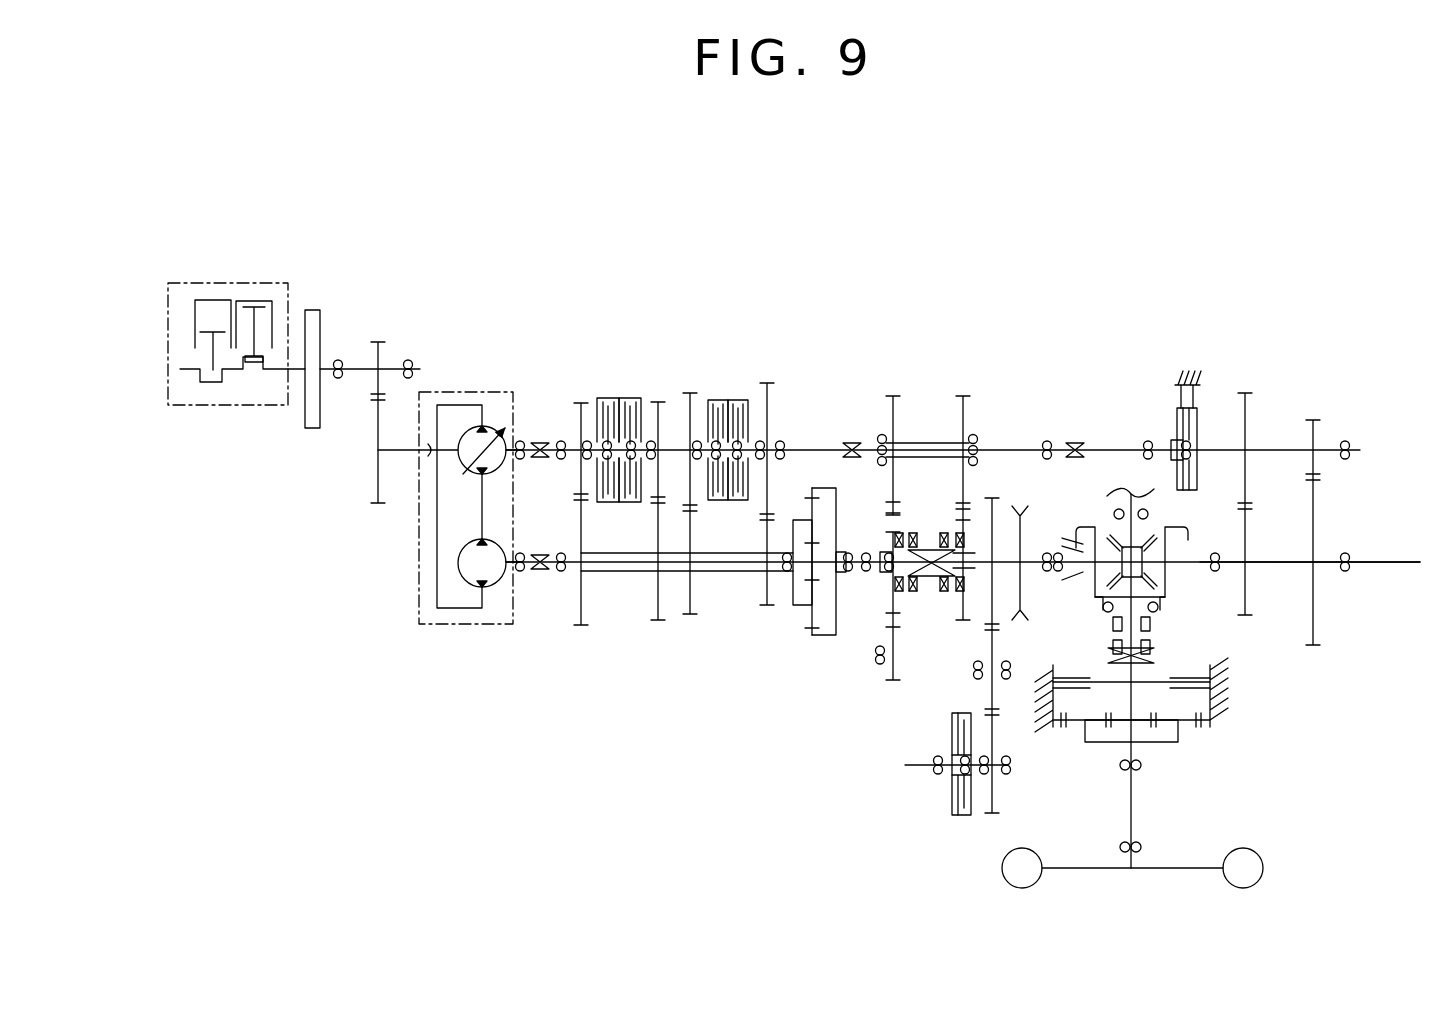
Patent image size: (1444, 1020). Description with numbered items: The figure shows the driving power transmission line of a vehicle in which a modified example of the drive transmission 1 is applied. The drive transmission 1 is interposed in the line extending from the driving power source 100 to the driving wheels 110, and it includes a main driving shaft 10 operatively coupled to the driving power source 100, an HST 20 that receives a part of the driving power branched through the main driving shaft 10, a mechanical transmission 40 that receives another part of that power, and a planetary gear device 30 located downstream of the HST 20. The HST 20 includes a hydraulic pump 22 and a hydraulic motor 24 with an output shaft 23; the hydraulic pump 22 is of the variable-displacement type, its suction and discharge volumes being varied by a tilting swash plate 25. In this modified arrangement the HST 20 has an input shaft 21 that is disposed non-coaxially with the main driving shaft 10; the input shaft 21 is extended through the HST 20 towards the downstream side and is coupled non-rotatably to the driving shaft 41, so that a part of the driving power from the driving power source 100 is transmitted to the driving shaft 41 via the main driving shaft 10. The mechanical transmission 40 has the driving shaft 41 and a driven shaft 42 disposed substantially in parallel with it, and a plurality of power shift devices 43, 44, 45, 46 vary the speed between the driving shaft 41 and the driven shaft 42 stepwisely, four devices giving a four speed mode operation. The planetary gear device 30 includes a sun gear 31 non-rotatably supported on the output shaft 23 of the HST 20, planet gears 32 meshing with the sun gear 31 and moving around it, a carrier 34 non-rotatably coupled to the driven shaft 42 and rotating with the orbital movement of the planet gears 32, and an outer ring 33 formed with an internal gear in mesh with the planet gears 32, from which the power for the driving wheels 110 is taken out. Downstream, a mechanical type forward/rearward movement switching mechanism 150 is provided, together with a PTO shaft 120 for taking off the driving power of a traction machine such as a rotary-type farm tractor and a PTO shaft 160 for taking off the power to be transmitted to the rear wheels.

The drive transmission 1 is at (830, 322).
The main driving shaft 10 is at (360, 367).
The HST 20 is at (485, 484).
The input shaft 21 is at (380, 445).
The hydraulic pump 22 is at (460, 460).
The output shaft 23 is at (578, 565).
The hydraulic motor 24 is at (468, 578).
The swash plate 25 is at (498, 418).
The planetary gear device 30 is at (759, 620).
The sun gear 31 is at (810, 565).
The planet gears 32 is at (813, 617).
The outer ring 33 is at (830, 590).
The carrier 34 is at (805, 603).
The mechanical transmission 40 is at (745, 429).
The driving shaft 41 is at (573, 445).
The driven shaft 42 is at (618, 575).
The power shift device 43 is at (608, 390).
The power shift device 44 is at (637, 390).
The power shift device 45 is at (721, 392).
The power shift device 46 is at (741, 392).
The driving power source 100 is at (211, 283).
The driving wheels 110 is at (1263, 868).
The PTO shaft 120 is at (1420, 562).
The mechanical type forward/rearward movement switching mechanism 150 is at (925, 618).
The PTO shaft 160 is at (917, 767).